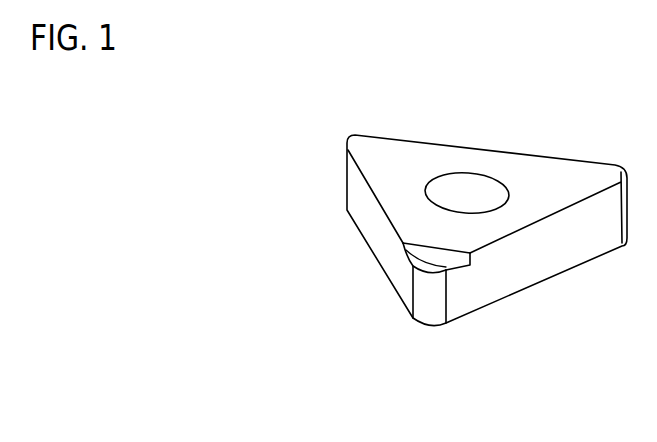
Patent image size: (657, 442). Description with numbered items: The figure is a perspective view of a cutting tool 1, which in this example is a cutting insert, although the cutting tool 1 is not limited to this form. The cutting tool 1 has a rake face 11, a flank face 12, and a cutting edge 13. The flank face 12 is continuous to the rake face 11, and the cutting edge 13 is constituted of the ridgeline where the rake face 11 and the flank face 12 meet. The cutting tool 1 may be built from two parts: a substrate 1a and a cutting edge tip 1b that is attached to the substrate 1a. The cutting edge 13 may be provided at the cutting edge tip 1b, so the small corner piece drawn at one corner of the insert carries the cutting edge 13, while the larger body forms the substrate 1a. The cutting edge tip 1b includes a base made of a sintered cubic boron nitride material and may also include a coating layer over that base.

The cutting tool 1 is at (480, 380).
The substrate 1a is at (495, 268).
The cutting edge tip 1b is at (455, 270).
The rake face 11 is at (430, 257).
The flank face 12 is at (427, 286).
The cutting edge 13 is at (428, 273).